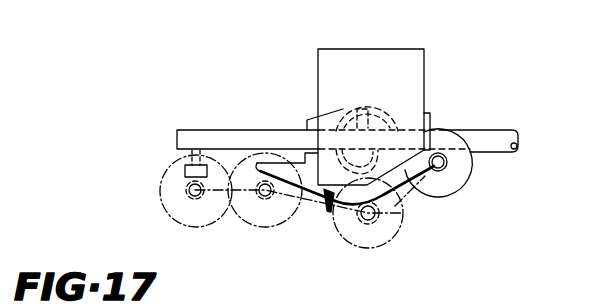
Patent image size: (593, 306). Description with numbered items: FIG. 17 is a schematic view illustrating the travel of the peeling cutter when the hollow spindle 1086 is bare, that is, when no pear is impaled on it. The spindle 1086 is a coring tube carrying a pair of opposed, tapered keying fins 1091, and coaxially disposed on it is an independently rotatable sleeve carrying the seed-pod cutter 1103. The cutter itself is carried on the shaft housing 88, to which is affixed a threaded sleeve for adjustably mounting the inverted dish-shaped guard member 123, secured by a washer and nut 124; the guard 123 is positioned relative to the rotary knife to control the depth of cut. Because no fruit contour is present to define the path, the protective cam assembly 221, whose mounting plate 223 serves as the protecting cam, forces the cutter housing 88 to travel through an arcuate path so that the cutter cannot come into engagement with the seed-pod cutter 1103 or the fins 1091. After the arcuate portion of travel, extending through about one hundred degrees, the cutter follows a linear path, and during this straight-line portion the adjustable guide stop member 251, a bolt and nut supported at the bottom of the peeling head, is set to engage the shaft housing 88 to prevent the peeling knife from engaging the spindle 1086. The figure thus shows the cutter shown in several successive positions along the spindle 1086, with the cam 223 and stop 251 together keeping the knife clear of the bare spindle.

The mounting plate 223 is at (410, 50).
The keying fins 1091 is at (342, 110).
The seed-pod cutter 1103 is at (383, 115).
The hollow spindle 1086 is at (508, 130).
The protective cam assembly 221 is at (329, 210).
The guard member 123 is at (210, 223).
The washer and nut 124 is at (406, 194).
The shaft housing 88 is at (270, 199).
The adjustable guide stop member 251 is at (184, 171).